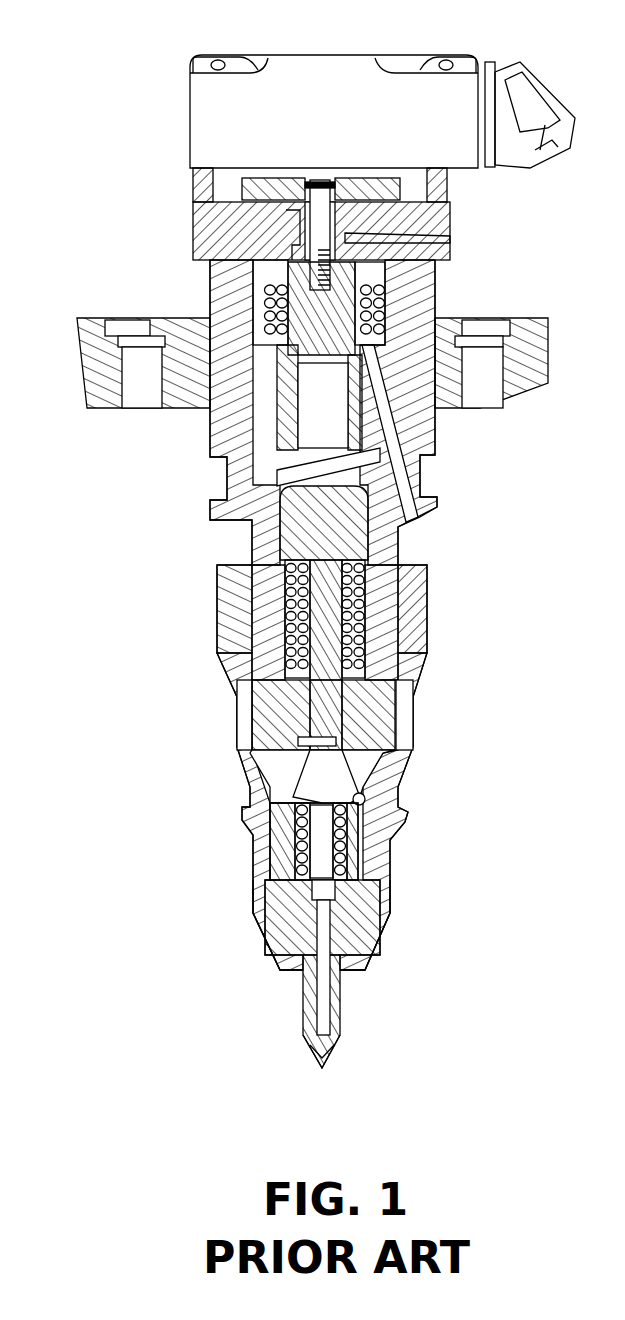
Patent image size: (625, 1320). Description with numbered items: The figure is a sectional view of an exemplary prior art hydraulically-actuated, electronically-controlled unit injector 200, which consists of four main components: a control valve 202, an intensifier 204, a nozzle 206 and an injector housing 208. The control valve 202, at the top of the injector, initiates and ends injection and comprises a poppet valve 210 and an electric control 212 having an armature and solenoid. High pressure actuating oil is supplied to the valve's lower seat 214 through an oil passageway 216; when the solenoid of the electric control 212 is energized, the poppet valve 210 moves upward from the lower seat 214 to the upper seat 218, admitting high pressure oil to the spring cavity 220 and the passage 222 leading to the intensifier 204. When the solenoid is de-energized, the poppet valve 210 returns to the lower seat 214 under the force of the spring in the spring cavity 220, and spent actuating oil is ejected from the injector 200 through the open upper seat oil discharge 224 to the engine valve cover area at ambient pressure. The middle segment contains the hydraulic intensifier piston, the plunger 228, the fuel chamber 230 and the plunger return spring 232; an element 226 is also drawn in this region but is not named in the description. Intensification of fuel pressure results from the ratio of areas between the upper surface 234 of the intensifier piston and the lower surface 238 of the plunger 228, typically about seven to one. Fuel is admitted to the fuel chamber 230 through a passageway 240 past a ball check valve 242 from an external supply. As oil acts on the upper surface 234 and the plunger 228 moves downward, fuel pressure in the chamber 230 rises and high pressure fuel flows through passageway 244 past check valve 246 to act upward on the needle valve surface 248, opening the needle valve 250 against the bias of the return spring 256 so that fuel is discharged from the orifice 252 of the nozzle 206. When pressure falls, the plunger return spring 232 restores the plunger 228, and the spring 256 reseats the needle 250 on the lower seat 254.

The fuel injector 200 is at (330, 18).
The control valve 202 is at (243, 410).
The intensifier 204 is at (327, 617).
The nozzle 206 is at (367, 940).
The injector housing 208 is at (435, 433).
The poppet valve 210 is at (310, 312).
The electric control 212 is at (222, 123).
The lower seat 214 is at (433, 407).
The oil passageway 216 is at (400, 520).
The upper seat 218 is at (300, 262).
The spring cavity 220 is at (380, 292).
The passage 222 is at (263, 352).
The upper seat oil discharge 224 is at (448, 240).
The intensifier piston 226 is at (267, 490).
The plunger 228 is at (273, 717).
The fuel chamber 230 is at (307, 745).
The plunger return spring 232 is at (360, 617).
The upper surface 234 is at (290, 470).
The lower surface 238 is at (330, 737).
The passageway 240 is at (270, 758).
The check valve 242 is at (297, 807).
The passageway 244 is at (363, 860).
The check valve 246 is at (375, 780).
The needle valve surface 248 is at (303, 957).
The needle valve 250 is at (322, 997).
The orifice 252 is at (320, 1055).
The lower seat 254 is at (277, 928).
The return spring 256 is at (295, 845).